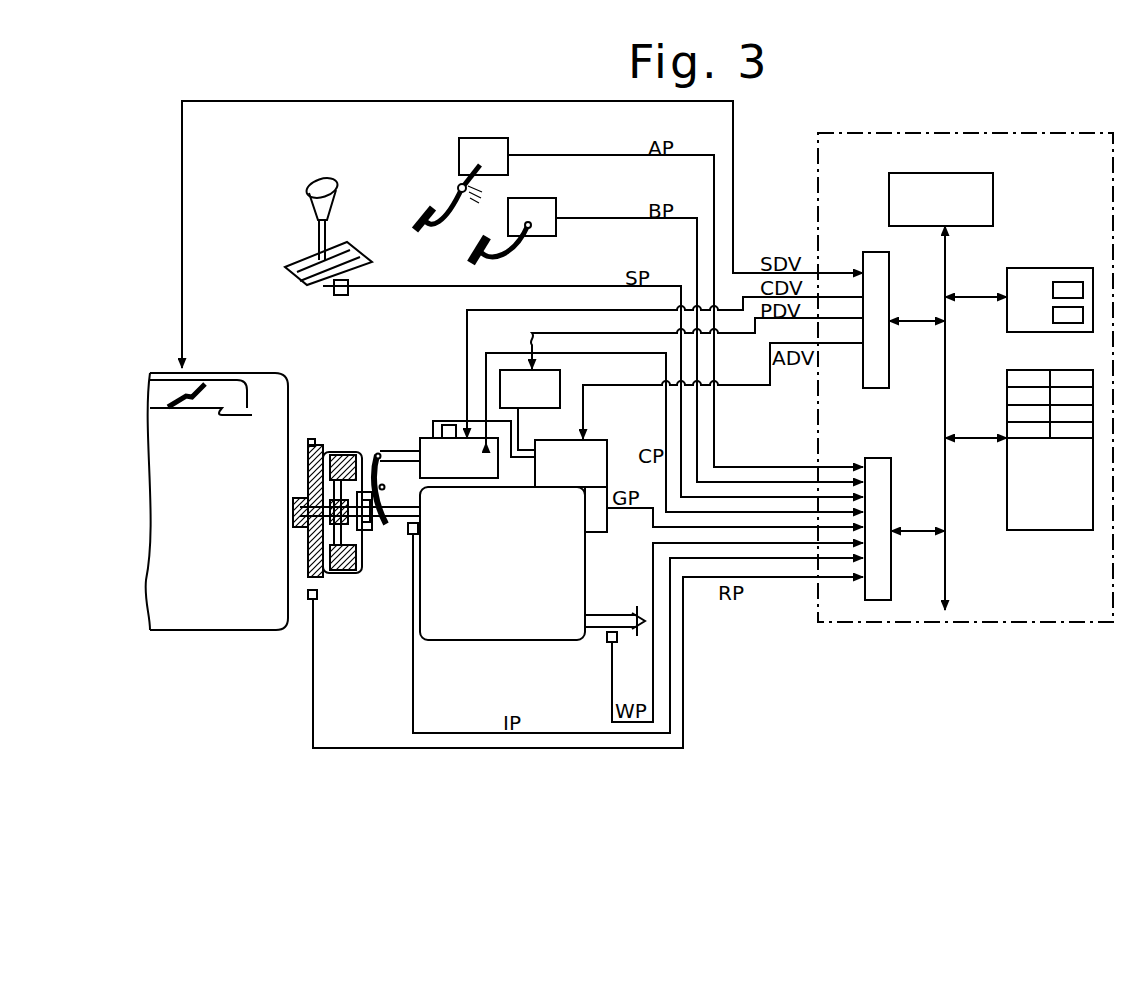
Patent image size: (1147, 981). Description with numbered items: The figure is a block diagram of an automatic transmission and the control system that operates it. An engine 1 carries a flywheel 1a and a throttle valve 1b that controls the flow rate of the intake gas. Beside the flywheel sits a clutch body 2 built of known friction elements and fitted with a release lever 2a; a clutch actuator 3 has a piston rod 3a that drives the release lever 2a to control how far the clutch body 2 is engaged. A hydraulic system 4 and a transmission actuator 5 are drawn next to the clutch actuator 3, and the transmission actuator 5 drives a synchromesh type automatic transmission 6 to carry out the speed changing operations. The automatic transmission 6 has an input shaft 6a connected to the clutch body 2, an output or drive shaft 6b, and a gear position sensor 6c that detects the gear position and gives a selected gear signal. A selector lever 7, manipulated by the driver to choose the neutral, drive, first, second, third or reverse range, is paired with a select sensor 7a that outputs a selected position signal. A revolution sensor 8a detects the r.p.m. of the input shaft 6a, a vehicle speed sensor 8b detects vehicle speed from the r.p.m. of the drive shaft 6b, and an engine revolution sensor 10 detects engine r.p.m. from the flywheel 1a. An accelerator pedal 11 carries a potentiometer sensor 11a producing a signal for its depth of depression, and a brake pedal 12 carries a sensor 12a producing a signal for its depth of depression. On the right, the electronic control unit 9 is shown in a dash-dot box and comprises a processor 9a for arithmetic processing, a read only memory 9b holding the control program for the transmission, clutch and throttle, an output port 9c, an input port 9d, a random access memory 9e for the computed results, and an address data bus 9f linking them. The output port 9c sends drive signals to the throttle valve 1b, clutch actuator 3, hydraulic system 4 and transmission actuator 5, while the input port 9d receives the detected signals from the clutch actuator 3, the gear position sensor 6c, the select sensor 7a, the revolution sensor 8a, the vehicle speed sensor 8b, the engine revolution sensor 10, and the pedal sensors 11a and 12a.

The engine 1 is at (274, 372).
The flywheel 1a is at (304, 442).
The throttle valve 1b is at (198, 382).
The clutch body 2 is at (338, 447).
The release lever 2a is at (366, 455).
The clutch actuator 3 is at (450, 447).
The piston rod 3a is at (401, 448).
The hydraulic system 4 is at (560, 385).
The transmission actuator 5 is at (603, 450).
The automatic transmission 6 is at (521, 641).
The input shaft 6a is at (387, 527).
The output shaft 6b is at (591, 630).
The gear position sensor 6c is at (597, 533).
The selector lever 7 is at (330, 237).
The select sensor 7a is at (350, 285).
The revolution sensor 8a is at (411, 536).
The vehicle speed sensor 8b is at (615, 645).
The electronic control unit 9 is at (1074, 134).
The processor 9a is at (994, 187).
The read only memory 9b is at (1047, 269).
The output port 9c is at (880, 390).
The input port 9d is at (884, 486).
The random access memory 9e is at (1073, 531).
The address data bus 9f is at (946, 560).
The engine revolution sensor 10 is at (310, 602).
The accelerator pedal 11 is at (428, 206).
The sensor 11a is at (490, 141).
The brake pedal 12 is at (466, 250).
The sensor 12a is at (560, 205).